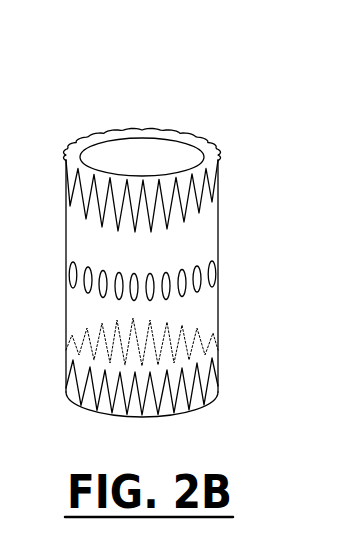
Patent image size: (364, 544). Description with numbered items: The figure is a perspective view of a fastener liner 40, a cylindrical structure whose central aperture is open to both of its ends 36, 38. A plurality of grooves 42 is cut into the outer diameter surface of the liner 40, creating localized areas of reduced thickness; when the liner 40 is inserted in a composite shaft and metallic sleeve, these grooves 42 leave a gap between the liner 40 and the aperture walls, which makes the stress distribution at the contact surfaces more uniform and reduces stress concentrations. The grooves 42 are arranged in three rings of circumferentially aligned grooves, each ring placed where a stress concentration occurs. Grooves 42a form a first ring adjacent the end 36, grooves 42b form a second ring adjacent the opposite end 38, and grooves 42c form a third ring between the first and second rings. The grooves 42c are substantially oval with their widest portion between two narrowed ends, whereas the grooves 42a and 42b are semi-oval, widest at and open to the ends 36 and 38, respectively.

The liner 40 is at (120, 89).
The end 36 is at (185, 126).
The end 38 is at (178, 405).
The grooves 42 is at (284, 156).
The grooves 42a is at (219, 187).
The grooves 42b is at (219, 387).
The grooves 42c is at (219, 277).